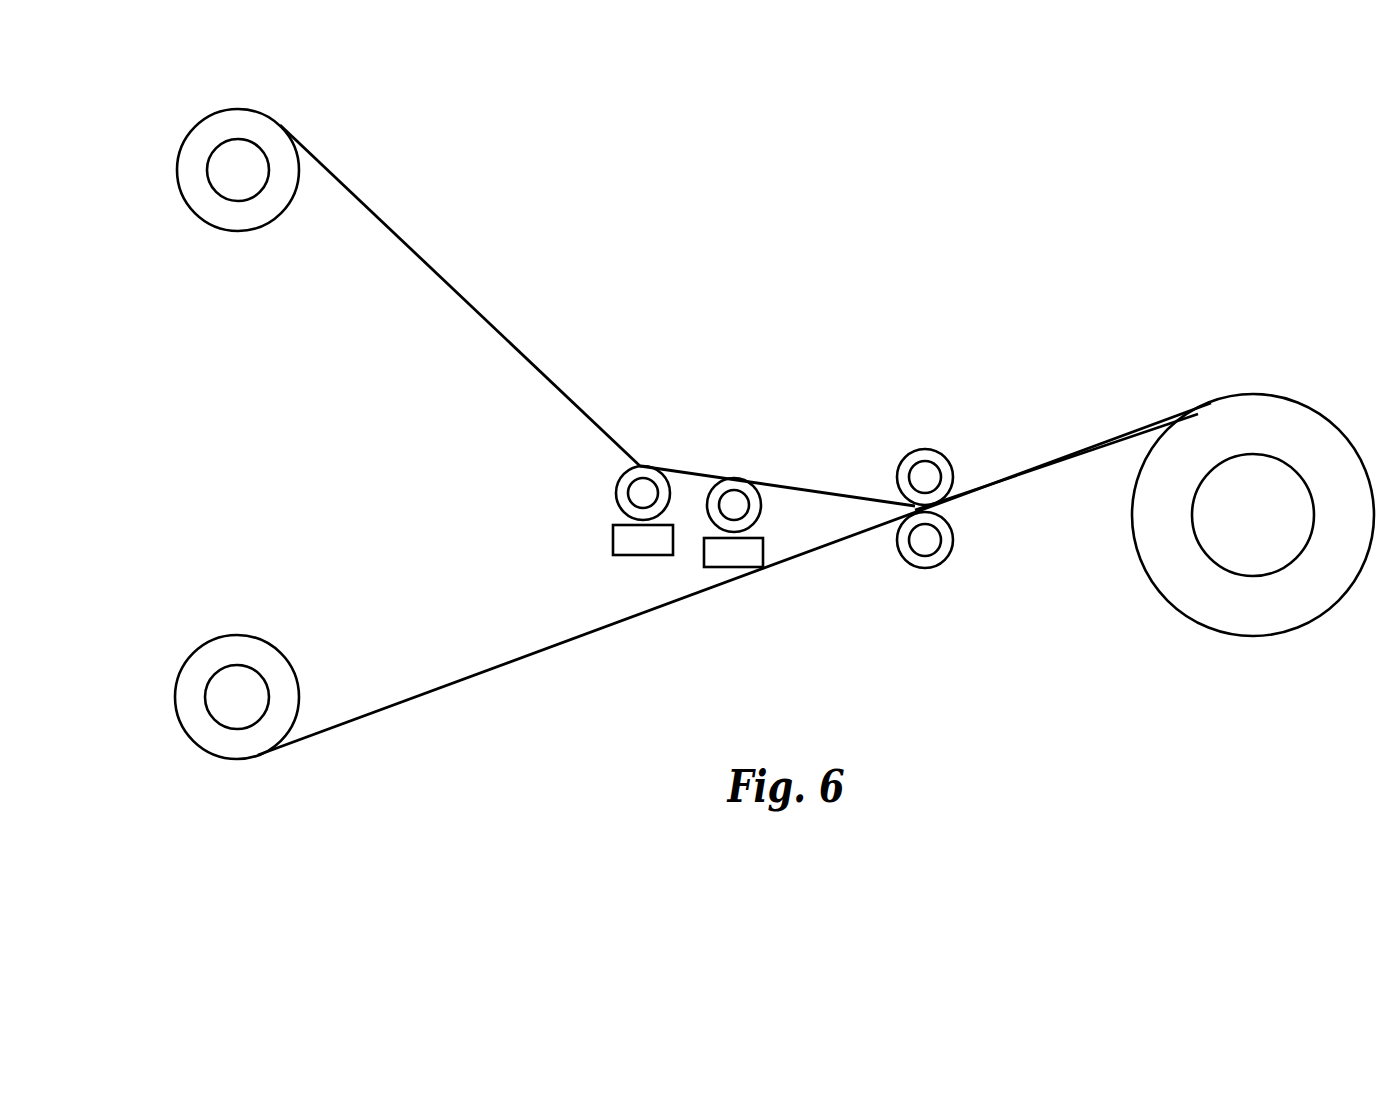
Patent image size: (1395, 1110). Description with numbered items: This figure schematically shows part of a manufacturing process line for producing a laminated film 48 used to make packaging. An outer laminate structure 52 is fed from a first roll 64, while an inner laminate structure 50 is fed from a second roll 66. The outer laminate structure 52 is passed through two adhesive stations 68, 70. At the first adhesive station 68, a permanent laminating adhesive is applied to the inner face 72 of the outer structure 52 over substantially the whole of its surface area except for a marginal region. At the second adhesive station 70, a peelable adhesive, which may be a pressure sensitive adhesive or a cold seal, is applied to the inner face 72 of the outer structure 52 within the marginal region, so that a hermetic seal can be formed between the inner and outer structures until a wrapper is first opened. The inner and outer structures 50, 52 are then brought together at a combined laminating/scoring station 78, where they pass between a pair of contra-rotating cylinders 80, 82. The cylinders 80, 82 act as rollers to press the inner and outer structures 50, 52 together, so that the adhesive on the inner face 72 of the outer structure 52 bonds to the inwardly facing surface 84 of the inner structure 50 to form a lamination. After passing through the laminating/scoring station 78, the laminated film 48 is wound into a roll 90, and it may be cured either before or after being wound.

The laminated film 48 is at (1118, 432).
The inner laminate structure 50 is at (420, 690).
The outer laminate structure 52 is at (438, 275).
The first roll 64 is at (258, 125).
The second roll 66 is at (222, 745).
The first adhesive station 68 is at (613, 540).
The second adhesive station 70 is at (763, 547).
The inner face 72 is at (553, 392).
The combined laminating/scoring station 78 is at (961, 497).
The contra-rotating cylinder 80 is at (922, 455).
The contra-rotating cylinder 82 is at (937, 558).
The inwardly facing surface 84 is at (559, 641).
The roll 90 is at (1225, 610).